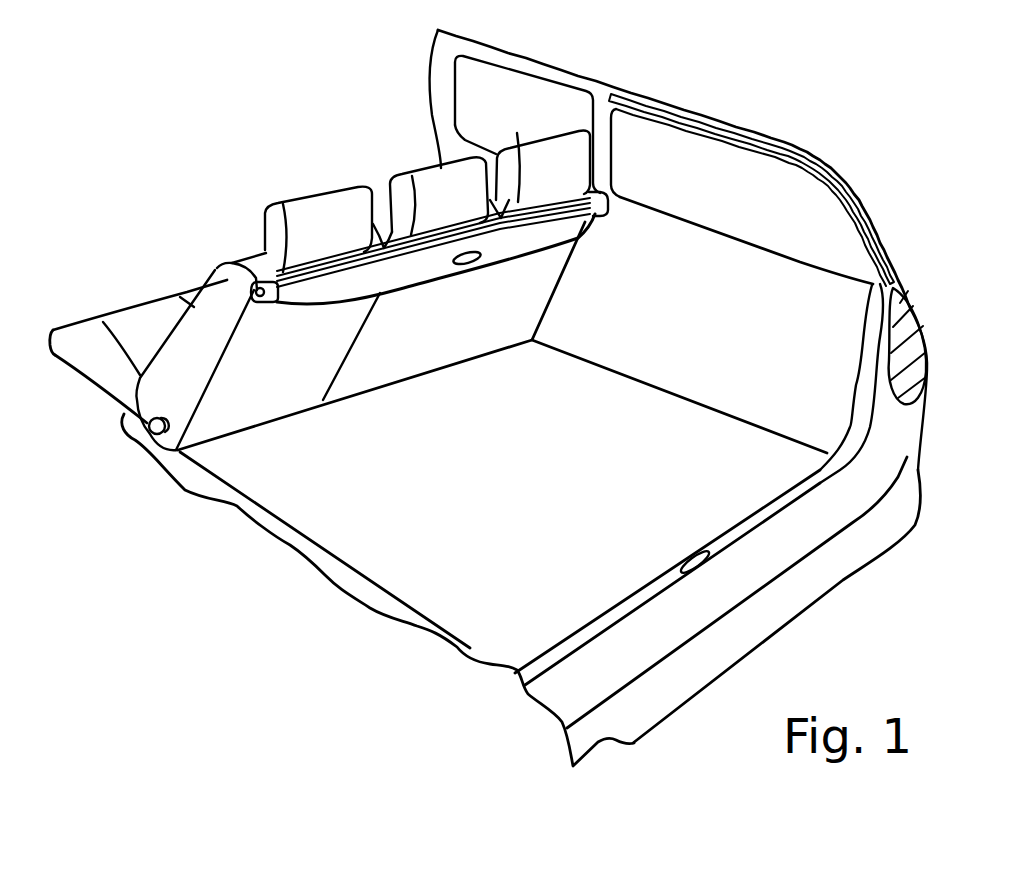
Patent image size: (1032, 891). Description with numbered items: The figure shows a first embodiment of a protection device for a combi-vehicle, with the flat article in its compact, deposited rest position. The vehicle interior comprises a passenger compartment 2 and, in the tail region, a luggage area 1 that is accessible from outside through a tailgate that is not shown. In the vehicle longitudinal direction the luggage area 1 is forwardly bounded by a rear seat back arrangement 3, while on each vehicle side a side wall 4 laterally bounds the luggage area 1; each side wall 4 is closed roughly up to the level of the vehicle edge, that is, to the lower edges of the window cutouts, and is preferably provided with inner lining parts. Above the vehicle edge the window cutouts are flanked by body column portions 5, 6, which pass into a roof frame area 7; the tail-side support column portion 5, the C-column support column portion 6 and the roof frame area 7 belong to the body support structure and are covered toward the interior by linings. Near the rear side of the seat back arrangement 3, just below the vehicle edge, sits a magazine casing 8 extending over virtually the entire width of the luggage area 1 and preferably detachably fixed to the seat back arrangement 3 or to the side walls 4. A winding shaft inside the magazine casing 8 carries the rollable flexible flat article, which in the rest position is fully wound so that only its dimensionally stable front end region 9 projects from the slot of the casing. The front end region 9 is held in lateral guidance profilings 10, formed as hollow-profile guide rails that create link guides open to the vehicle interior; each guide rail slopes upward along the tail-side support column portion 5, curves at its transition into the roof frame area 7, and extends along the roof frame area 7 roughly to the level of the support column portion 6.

The luggage area 1 is at (388, 527).
The passenger compartment 2 is at (118, 286).
The rear seat back arrangement 3 is at (418, 340).
The side wall 4 is at (702, 358).
The tail-side support column portion 5 is at (847, 223).
The support column portion 6 is at (602, 138).
The roof frame area 7 is at (558, 73).
The magazine casing 8 is at (253, 294).
The front end region 9 is at (513, 238).
The guidance profiling 10 is at (707, 127).